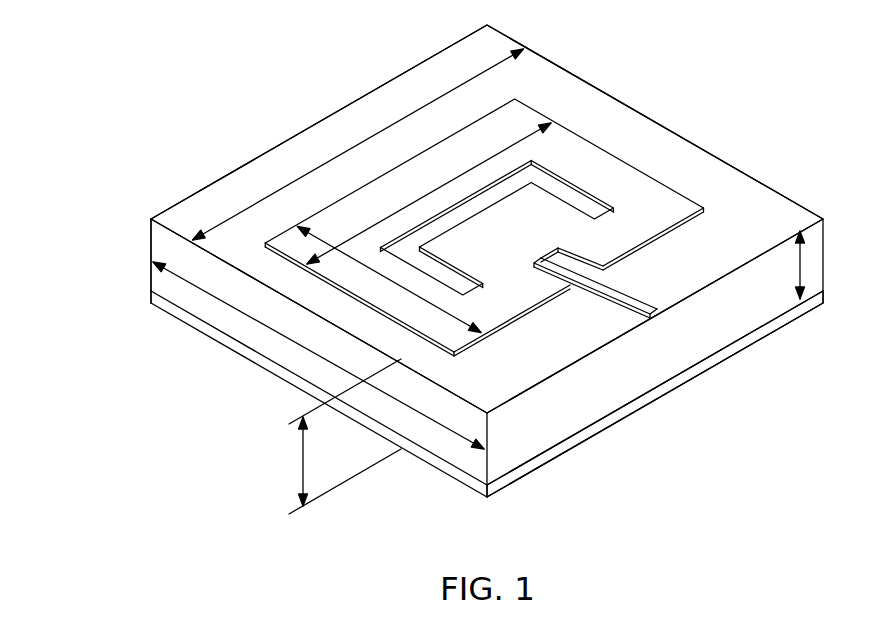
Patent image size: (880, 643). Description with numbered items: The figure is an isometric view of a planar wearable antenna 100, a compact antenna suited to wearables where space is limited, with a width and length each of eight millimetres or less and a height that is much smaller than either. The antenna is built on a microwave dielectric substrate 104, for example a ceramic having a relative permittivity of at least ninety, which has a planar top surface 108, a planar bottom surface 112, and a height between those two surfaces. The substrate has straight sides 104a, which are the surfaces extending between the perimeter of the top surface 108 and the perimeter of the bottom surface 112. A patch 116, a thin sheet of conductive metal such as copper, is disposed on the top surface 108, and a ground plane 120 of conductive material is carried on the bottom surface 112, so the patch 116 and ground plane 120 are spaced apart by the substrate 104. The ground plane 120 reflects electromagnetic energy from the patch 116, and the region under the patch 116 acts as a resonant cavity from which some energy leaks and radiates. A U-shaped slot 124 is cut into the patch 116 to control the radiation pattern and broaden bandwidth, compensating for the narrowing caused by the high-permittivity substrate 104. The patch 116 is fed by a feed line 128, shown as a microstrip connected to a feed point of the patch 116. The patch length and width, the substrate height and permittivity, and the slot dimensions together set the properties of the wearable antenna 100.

The wearable antenna 100 is at (337, 92).
The microwave dielectric substrate 104 is at (612, 388).
The sides 104a is at (163, 243).
The top surface 108 is at (566, 90).
The bottom surface 112 is at (547, 452).
The patch 116 is at (580, 158).
The ground plane 120 is at (727, 350).
The U-shaped slot 124 is at (582, 202).
The feed line 128 is at (642, 303).